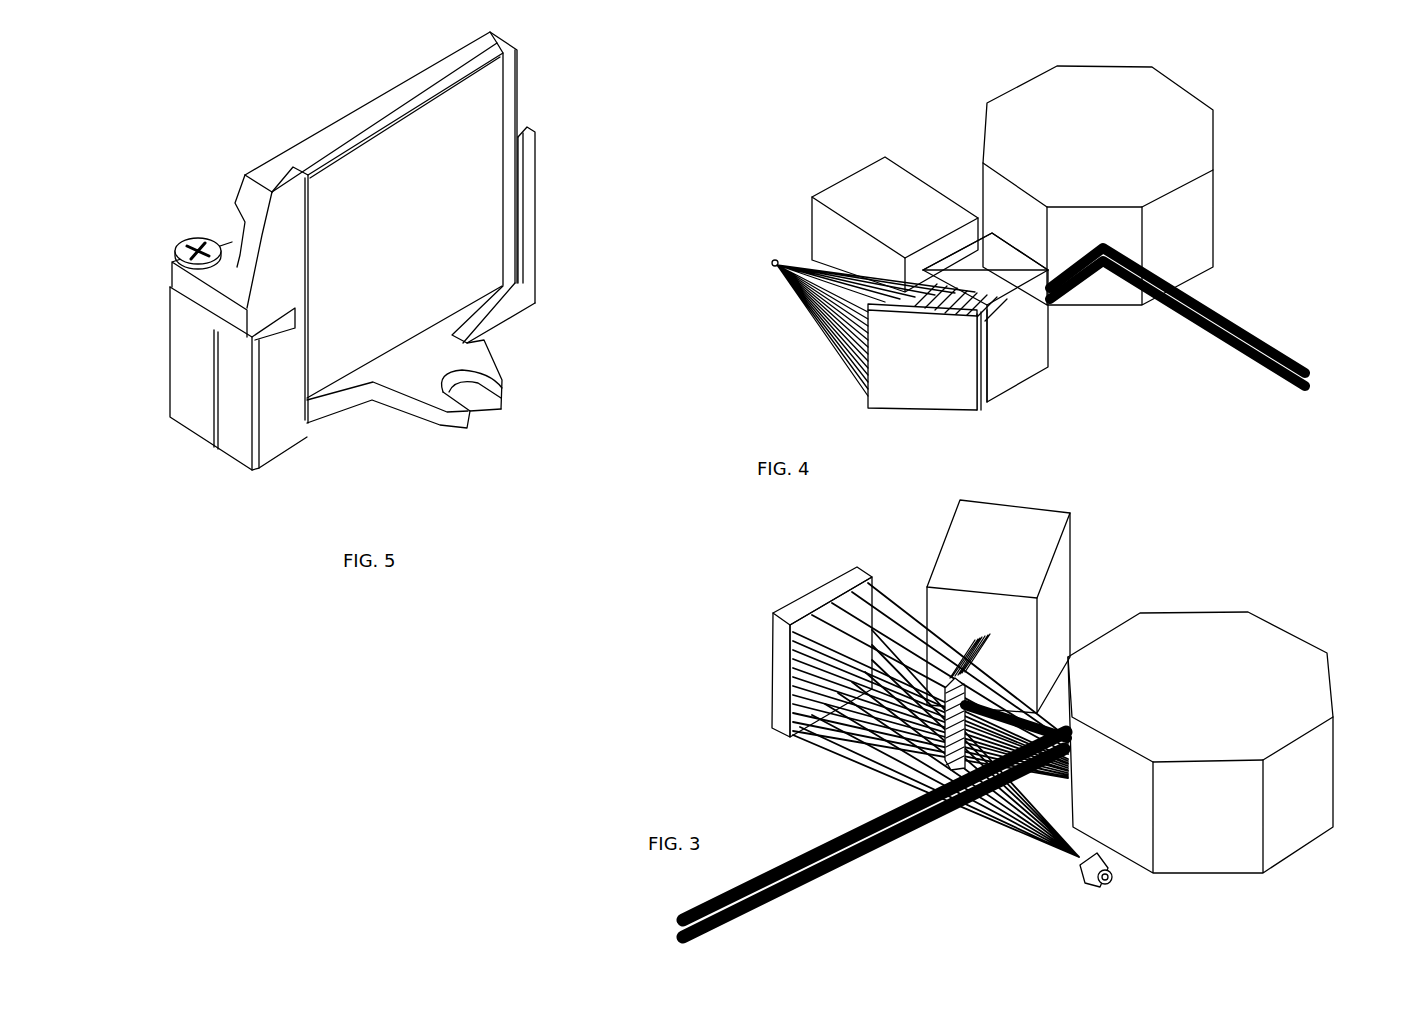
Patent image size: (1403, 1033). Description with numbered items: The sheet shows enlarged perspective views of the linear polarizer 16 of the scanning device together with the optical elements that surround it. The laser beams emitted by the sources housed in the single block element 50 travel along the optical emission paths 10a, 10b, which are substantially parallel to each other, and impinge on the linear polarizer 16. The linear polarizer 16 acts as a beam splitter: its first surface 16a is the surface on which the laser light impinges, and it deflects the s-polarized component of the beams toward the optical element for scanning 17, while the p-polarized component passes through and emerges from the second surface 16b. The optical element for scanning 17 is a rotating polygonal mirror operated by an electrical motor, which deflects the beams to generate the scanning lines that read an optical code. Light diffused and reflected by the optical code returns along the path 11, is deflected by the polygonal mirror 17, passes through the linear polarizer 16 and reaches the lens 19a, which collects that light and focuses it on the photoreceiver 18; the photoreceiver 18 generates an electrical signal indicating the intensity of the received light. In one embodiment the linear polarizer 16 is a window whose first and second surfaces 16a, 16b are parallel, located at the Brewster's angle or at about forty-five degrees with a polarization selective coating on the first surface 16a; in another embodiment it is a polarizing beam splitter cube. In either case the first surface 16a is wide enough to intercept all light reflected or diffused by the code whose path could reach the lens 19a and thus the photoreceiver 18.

In FIG. 4, the optical emission path 10a is at (1217, 308).
In FIG. 3, the optical emission path 10a is at (780, 872).
In FIG. 4, the optical emission path 10b is at (1228, 353).
In FIG. 3, the optical emission path 10b is at (860, 863).
In FIG. 3, the path of the light diffused and reflected by the optical code 11 is at (847, 703).
In FIG. 5, the linear polarizer 16 is at (530, 73).
In FIG. 4, the linear polarizer 16 is at (1028, 340).
In FIG. 3, the linear polarizer 16 is at (957, 688).
In FIG. 4, the first surface 16a is at (1013, 243).
In FIG. 5, the second surface 16b is at (379, 304).
In FIG. 4, the second surface 16b is at (985, 330).
In FIG. 4, the optical element for scanning 17 is at (1121, 185).
In FIG. 3, the optical element for scanning 17 is at (1174, 632).
In FIG. 4, the photoreceiver 18 is at (773, 262).
In FIG. 3, the photoreceiver 18 is at (1093, 873).
In FIG. 4, the lens 19a is at (888, 382).
In FIG. 3, the lens 19a is at (797, 600).
In FIG. 3, the single block element 50 is at (1017, 530).